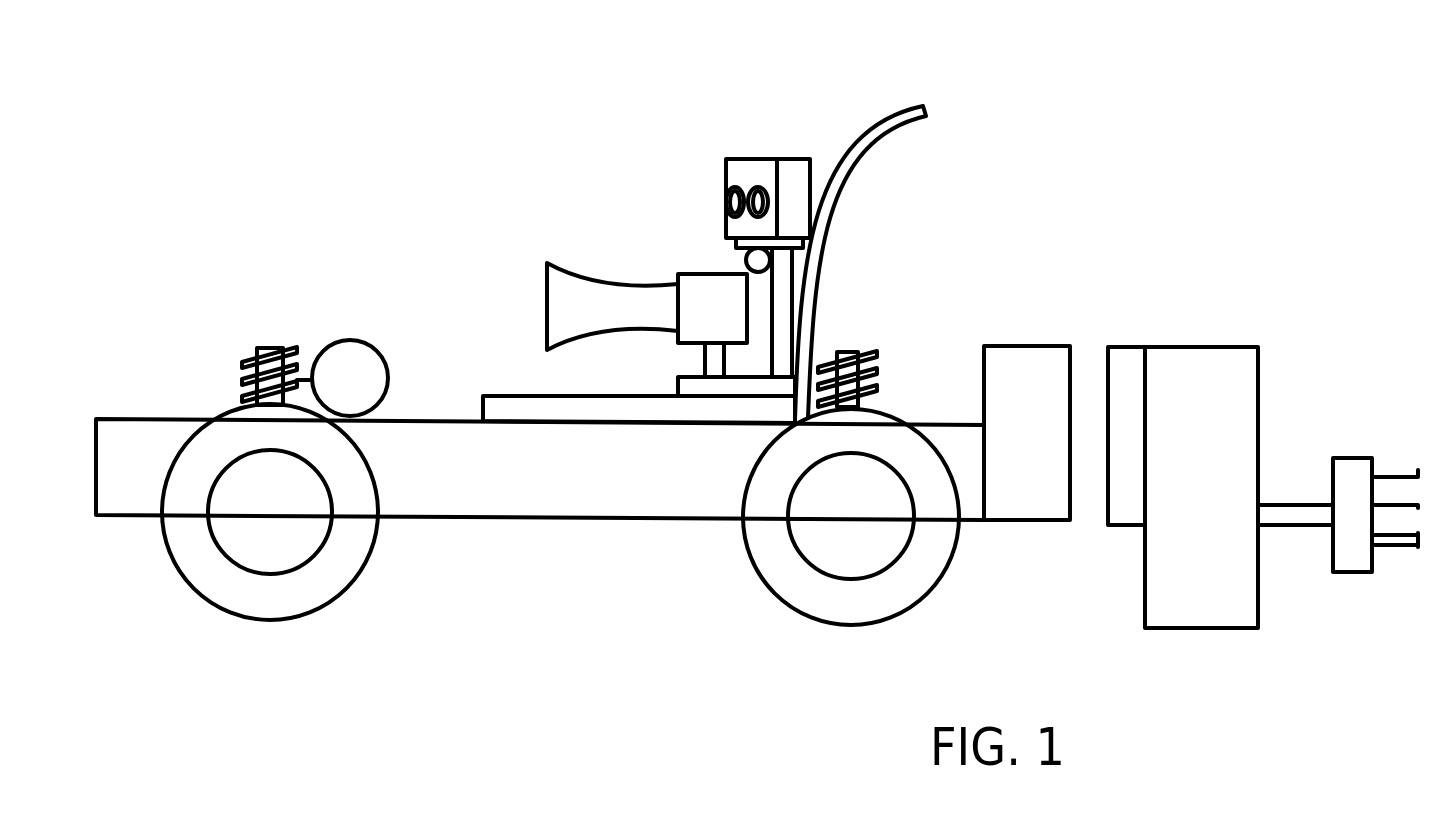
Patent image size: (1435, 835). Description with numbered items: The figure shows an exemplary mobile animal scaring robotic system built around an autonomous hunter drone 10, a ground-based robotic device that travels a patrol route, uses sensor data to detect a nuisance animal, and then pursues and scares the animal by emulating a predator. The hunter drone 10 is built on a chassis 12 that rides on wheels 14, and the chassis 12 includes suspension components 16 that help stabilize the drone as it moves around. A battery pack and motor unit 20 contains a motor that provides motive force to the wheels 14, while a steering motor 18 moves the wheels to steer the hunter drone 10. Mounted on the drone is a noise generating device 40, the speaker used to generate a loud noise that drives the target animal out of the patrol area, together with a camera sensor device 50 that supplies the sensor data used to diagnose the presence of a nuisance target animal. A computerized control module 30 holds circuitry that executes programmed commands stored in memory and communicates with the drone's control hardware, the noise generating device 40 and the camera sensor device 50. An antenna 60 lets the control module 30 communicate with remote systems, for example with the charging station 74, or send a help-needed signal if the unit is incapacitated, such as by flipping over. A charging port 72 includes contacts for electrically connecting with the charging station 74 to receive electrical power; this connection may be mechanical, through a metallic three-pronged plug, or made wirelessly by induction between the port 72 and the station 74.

The hunter drone 10 is at (408, 93).
The chassis 12 is at (140, 418).
The wheels 14 is at (352, 568).
The suspension components 16 is at (270, 342).
The steering motor 18 is at (353, 355).
The battery pack and motor unit 20 is at (522, 402).
The computerized control module 30 is at (710, 385).
The noise generating device 40 is at (690, 282).
The camera sensor device 50 is at (767, 168).
The antenna 60 is at (877, 125).
The charging port 72 is at (1018, 357).
The charging station 74 is at (1166, 358).